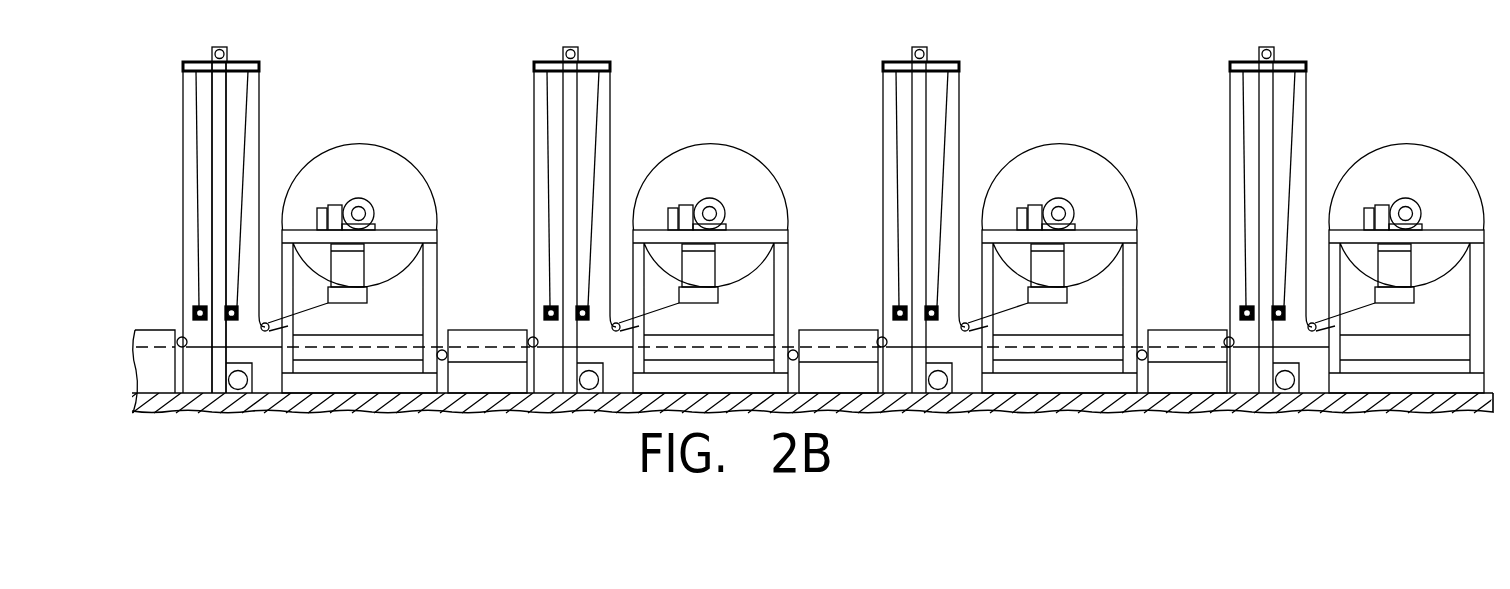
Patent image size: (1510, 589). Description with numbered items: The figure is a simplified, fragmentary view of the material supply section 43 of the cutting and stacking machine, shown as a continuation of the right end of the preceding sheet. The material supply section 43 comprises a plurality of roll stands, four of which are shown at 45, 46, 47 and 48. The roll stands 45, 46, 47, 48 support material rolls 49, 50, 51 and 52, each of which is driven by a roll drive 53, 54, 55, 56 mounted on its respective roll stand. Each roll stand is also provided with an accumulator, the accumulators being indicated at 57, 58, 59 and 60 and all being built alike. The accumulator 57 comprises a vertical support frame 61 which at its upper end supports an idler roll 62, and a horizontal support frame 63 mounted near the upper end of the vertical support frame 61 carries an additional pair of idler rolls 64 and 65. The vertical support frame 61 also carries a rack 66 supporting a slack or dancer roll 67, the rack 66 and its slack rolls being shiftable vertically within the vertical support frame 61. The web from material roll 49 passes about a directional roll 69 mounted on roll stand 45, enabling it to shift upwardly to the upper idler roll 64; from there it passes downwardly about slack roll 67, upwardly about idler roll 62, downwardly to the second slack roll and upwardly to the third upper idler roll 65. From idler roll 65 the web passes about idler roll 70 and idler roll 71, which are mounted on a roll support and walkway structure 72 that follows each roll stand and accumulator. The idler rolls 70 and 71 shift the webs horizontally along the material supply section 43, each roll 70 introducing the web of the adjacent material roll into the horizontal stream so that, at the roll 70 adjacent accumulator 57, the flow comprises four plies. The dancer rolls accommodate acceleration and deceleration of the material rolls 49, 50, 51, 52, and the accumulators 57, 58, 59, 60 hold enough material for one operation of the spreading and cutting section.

The material supply section 43 is at (760, 127).
The roll stand 45 is at (432, 248).
The roll stand 46 is at (740, 295).
The roll stand 47 is at (1087, 295).
The roll stand 48 is at (1413, 294).
The material roll 49 is at (358, 155).
The material roll 50 is at (736, 187).
The material roll 51 is at (1068, 172).
The material roll 52 is at (1415, 172).
The roll drive 53 is at (353, 262).
The roll drive 54 is at (721, 273).
The roll drive 55 is at (1070, 273).
The roll drive 56 is at (1417, 273).
The accumulator 57 is at (218, 102).
The accumulator 58 is at (619, 225).
The accumulator 59 is at (968, 225).
The accumulator 60 is at (1315, 225).
The vertical support frame 61 is at (218, 135).
The idler roll 62 is at (219, 48).
The horizontal support frame 63 is at (203, 62).
The idler roll 64 is at (256, 62).
The idler roll 65 is at (183, 64).
The rack 66 is at (200, 306).
The slack roll 67 is at (240, 322).
The directional roll 69 is at (290, 325).
The idler roll 70 is at (184, 347).
The idler roll 71 is at (441, 350).
The roll support and walkway structure 72 is at (152, 340).